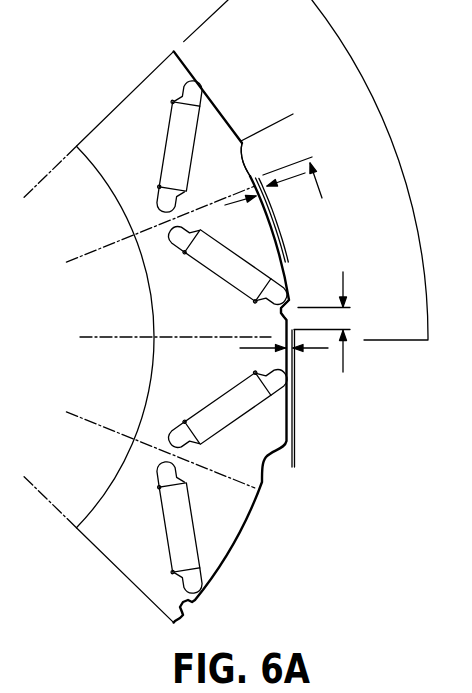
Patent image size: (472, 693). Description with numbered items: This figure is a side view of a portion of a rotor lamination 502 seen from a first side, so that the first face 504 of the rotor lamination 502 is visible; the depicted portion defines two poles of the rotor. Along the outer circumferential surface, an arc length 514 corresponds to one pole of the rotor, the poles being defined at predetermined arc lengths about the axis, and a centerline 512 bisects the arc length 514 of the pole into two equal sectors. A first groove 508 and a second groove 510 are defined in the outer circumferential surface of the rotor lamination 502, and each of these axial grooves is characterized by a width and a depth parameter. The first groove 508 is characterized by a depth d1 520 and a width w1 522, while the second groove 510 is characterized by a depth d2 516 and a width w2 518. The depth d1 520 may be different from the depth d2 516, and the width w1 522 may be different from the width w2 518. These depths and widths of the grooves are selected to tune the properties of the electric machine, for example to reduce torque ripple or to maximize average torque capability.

The rotor lamination 502 is at (125, 572).
The first face 504 is at (168, 282).
The first groove 508 is at (245, 162).
The second groove 510 is at (288, 319).
The centerline 512 is at (106, 245).
The arc length 514 is at (412, 195).
The depth d2 516 is at (290, 452).
The width w2 518 is at (344, 365).
The depth d1 520 is at (292, 248).
The width w1 522 is at (286, 113).
The depth of first groove d1 is at (238, 203).
The depth of second groove d2 is at (318, 348).
The width of first groove w1 is at (322, 198).
The width of second groove w2 is at (344, 282).